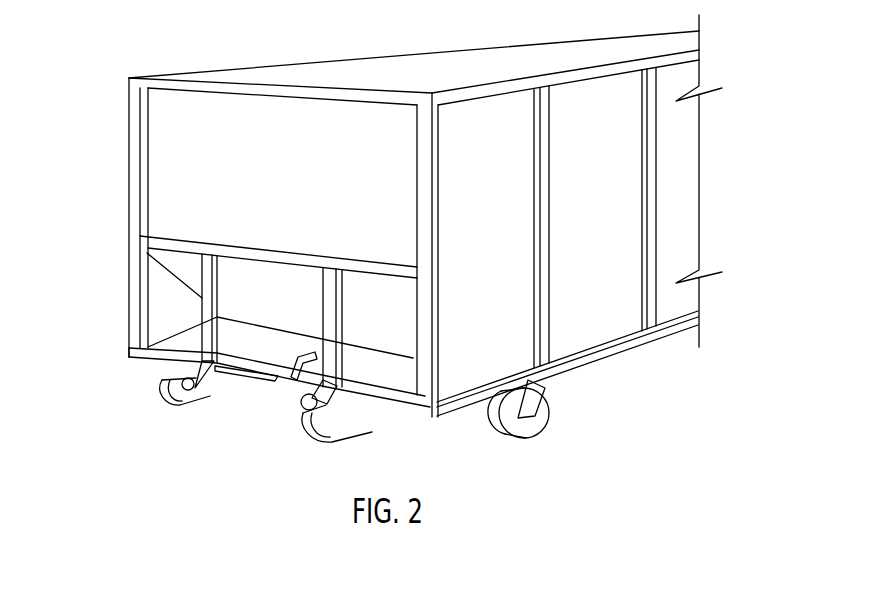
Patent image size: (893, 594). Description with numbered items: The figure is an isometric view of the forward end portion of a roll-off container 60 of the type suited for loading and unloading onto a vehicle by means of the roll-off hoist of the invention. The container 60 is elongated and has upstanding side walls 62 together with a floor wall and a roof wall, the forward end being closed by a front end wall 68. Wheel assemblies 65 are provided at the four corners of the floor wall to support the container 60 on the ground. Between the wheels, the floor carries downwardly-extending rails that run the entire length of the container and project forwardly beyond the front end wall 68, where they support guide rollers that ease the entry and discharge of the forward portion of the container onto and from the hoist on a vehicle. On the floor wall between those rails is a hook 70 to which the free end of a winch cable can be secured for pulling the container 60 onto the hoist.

The roll-off container 60 is at (129, 166).
The side walls 62 is at (498, 195).
The wheel assemblies 65 is at (551, 408).
The front end wall 68 is at (283, 180).
The hook 70 is at (310, 354).